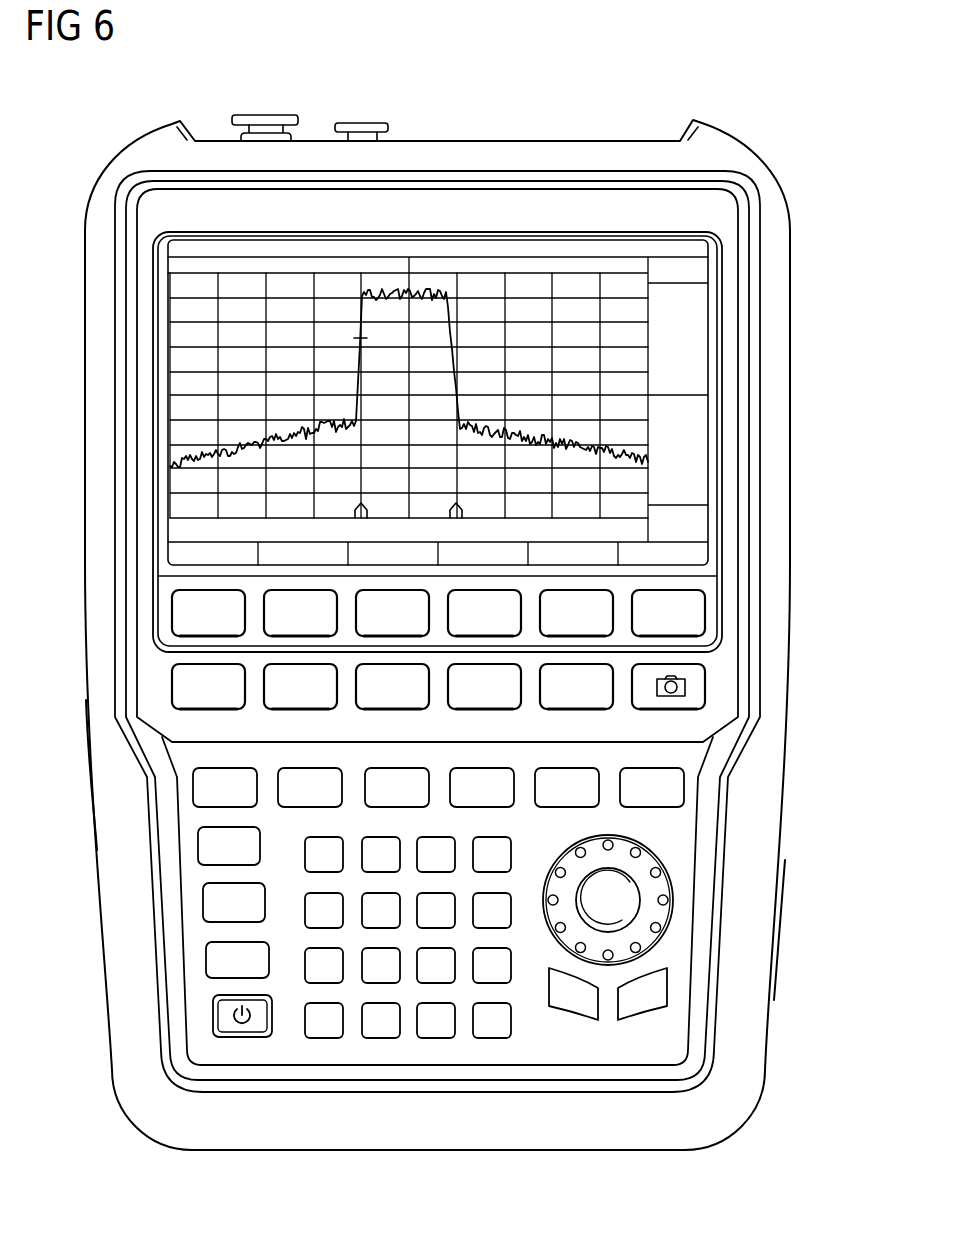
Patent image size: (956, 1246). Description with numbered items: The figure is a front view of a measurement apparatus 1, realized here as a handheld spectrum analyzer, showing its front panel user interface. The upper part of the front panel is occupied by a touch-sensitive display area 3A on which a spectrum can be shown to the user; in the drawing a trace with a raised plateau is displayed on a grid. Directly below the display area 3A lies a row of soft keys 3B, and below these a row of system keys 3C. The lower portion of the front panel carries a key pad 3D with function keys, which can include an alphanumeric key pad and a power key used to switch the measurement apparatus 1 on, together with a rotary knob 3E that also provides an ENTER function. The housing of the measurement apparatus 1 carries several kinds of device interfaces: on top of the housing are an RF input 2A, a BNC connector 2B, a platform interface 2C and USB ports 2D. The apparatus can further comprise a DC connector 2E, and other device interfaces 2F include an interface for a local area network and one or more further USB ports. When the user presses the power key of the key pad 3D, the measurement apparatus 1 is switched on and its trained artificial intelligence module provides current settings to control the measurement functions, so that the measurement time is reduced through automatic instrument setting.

The measurement apparatus 1 is at (746, 103).
The RF input 2A is at (266, 114).
The BNC connector 2B is at (363, 122).
The platform interface 2C is at (466, 140).
The USB ports 2D is at (572, 140).
The DC connector 2E is at (94, 812).
The device interfaces 2F is at (778, 950).
The touch-sensitive display area 3A is at (380, 380).
The soft keys 3B is at (173, 612).
The system keys 3C is at (173, 688).
The key pad 3D is at (212, 1050).
The rotary knob 3E is at (653, 888).